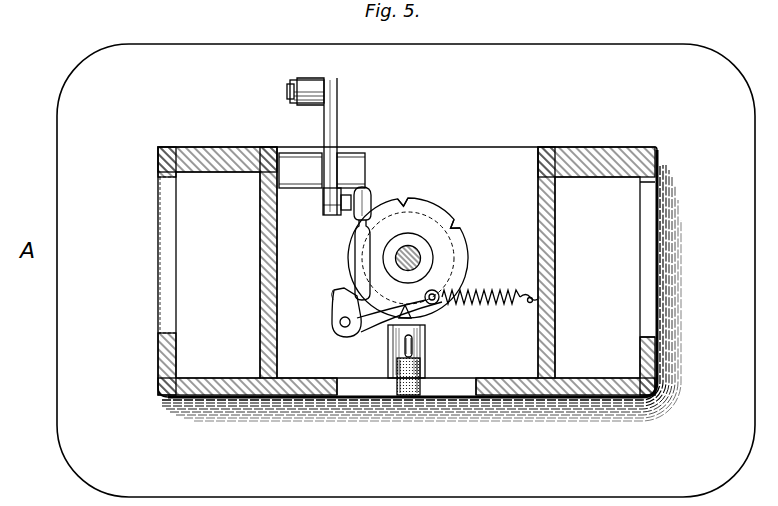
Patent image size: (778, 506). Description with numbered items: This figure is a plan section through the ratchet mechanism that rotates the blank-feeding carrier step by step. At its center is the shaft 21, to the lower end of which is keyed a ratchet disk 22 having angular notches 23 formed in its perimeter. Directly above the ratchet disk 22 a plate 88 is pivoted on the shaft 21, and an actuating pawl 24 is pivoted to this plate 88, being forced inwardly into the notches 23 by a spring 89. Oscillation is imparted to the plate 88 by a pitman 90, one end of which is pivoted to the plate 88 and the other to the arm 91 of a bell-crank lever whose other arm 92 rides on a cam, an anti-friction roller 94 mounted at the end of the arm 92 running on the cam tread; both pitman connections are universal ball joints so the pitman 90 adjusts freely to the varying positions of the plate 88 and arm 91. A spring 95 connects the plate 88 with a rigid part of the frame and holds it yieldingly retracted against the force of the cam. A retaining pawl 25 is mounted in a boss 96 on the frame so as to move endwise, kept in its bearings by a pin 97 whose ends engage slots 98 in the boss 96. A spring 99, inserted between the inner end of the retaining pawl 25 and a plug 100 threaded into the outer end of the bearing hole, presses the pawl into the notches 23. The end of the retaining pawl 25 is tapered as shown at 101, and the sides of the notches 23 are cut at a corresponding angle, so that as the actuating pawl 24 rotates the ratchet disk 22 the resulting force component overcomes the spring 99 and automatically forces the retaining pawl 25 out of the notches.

The shaft 21 is at (412, 254).
The ratchet disk 22 is at (425, 200).
The angular notches 23 is at (403, 204).
The actuating pawl 24 is at (399, 327).
The retaining pawl 25 is at (410, 316).
The plate 88 is at (375, 262).
The spring 89 is at (335, 293).
The pitman 90 is at (355, 212).
The arm of bell-crank lever 91 is at (324, 207).
The arm of bell-crank lever 92 is at (338, 116).
The anti-friction roller 94 is at (296, 100).
The spring 95 is at (500, 291).
The boss 96 is at (426, 356).
The pin 97 is at (413, 344).
The slots 98 is at (405, 352).
The spring 99 is at (396, 392).
The plug 100 is at (409, 393).
The tapered end of retaining pawl 101 is at (464, 309).